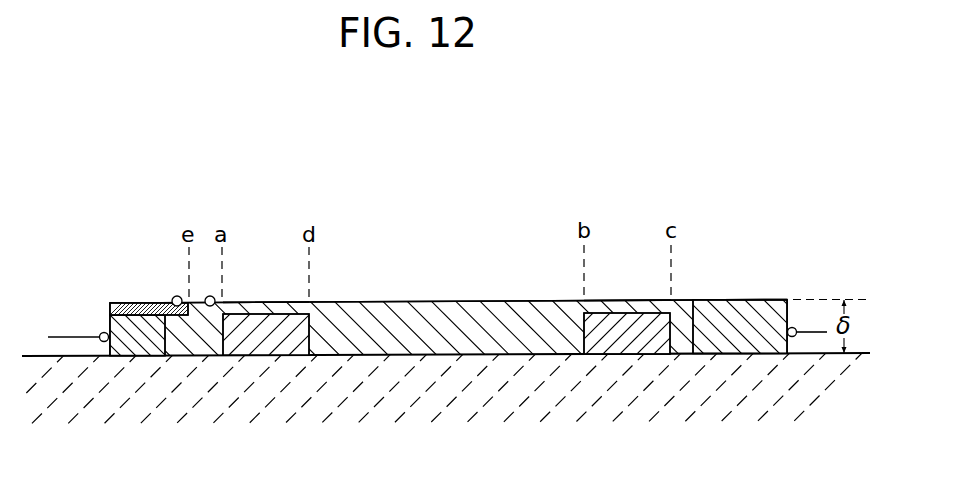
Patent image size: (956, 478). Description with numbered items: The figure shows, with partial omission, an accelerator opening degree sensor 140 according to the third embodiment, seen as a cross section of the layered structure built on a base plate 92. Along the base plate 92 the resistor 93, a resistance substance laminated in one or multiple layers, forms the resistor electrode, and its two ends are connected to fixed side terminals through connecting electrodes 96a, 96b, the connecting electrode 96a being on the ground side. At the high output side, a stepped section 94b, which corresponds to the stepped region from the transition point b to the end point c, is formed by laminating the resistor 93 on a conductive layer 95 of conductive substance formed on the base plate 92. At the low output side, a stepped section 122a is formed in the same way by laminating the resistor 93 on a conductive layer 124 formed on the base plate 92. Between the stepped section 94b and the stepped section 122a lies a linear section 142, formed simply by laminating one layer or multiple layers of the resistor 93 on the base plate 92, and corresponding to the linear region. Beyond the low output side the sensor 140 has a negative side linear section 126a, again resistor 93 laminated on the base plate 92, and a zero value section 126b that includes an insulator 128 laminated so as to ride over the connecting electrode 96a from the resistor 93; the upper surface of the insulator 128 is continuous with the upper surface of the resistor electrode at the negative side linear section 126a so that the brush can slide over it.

The accelerator opening degree sensor 140 is at (590, 120).
The base plate 92 is at (747, 385).
The resistor 93 is at (453, 333).
The conductive layer 95 is at (610, 333).
The conductive layer 124 is at (267, 332).
The linear section 142 is at (358, 300).
The stepped section 94b is at (621, 300).
The connecting electrode 96b is at (738, 310).
The connecting electrode 96a is at (125, 330).
The insulator 128 is at (128, 302).
The stepped section 122a is at (266, 301).
The negative side linear section 126a is at (212, 306).
The zero value section 126b is at (182, 306).